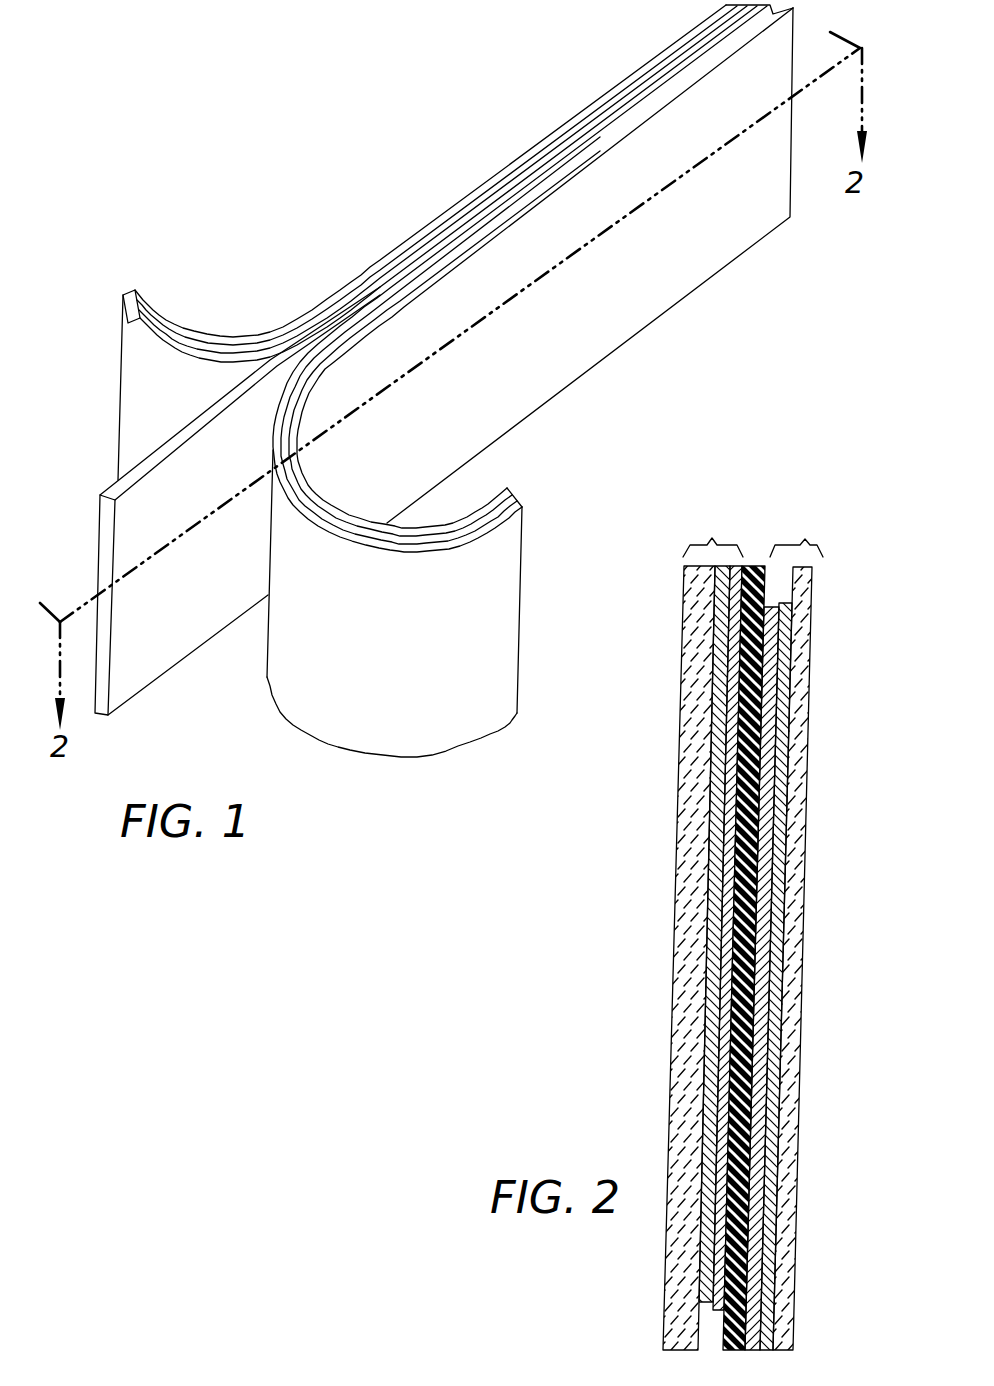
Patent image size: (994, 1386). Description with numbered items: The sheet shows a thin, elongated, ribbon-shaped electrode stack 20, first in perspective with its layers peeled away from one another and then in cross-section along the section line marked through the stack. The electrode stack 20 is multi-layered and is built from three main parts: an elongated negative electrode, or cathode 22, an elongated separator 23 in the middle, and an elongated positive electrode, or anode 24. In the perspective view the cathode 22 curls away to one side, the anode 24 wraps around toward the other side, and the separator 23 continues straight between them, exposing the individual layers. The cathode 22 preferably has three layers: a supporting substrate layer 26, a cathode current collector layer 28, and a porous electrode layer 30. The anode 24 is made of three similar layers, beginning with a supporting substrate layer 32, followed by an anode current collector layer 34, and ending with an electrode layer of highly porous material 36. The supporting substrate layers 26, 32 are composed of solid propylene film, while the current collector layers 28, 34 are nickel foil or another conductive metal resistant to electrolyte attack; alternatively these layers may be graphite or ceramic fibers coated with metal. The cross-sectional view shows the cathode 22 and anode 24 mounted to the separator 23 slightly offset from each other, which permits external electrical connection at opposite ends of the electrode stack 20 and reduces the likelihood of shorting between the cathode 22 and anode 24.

In FIG. 1, the electrode stack 20 is at (428, 195).
In FIG. 2, the electrode stack 20 is at (648, 993).
In FIG. 1, the cathode 22 is at (108, 389).
In FIG. 2, the cathode 22 is at (712, 537).
In FIG. 1, the separator 23 is at (162, 698).
In FIG. 2, the separator 23 is at (760, 556).
In FIG. 2, the anode 24 is at (805, 540).
In FIG. 1, the supporting substrate layer 26 is at (170, 326).
In FIG. 2, the supporting substrate layer 26 is at (682, 740).
In FIG. 1, the cathode current collector layer 28 is at (150, 322).
In FIG. 2, the cathode current collector layer 28 is at (713, 800).
In FIG. 1, the porous electrode layer 30 is at (128, 322).
In FIG. 2, the porous electrode layer 30 is at (725, 900).
In FIG. 1, the supporting substrate layer 32 is at (500, 497).
In FIG. 2, the supporting substrate layer 32 is at (810, 811).
In FIG. 1, the anode current collector layer 34 is at (514, 500).
In FIG. 2, the anode current collector layer 34 is at (778, 900).
In FIG. 1, the electrode layer of highly porous material 36 is at (522, 507).
In FIG. 2, the electrode layer of highly porous material 36 is at (770, 1028).